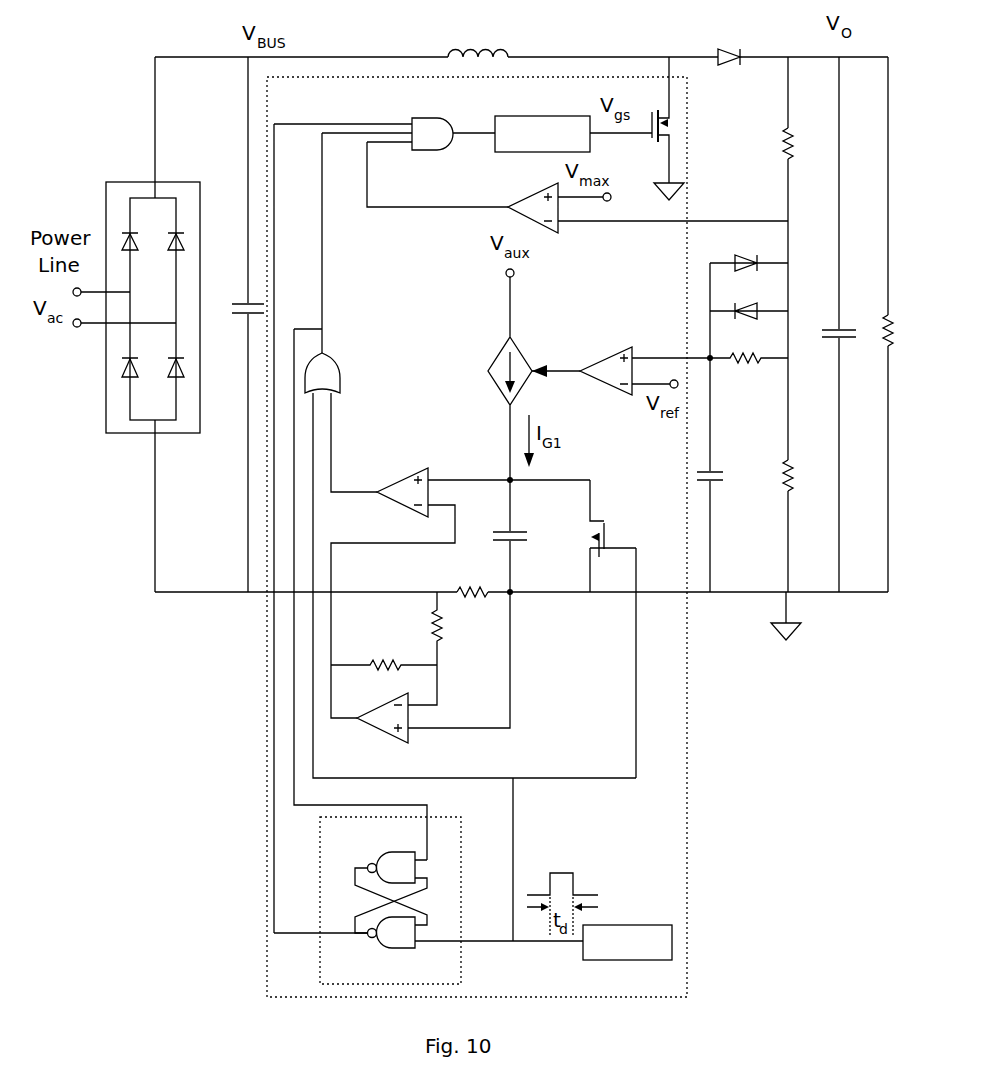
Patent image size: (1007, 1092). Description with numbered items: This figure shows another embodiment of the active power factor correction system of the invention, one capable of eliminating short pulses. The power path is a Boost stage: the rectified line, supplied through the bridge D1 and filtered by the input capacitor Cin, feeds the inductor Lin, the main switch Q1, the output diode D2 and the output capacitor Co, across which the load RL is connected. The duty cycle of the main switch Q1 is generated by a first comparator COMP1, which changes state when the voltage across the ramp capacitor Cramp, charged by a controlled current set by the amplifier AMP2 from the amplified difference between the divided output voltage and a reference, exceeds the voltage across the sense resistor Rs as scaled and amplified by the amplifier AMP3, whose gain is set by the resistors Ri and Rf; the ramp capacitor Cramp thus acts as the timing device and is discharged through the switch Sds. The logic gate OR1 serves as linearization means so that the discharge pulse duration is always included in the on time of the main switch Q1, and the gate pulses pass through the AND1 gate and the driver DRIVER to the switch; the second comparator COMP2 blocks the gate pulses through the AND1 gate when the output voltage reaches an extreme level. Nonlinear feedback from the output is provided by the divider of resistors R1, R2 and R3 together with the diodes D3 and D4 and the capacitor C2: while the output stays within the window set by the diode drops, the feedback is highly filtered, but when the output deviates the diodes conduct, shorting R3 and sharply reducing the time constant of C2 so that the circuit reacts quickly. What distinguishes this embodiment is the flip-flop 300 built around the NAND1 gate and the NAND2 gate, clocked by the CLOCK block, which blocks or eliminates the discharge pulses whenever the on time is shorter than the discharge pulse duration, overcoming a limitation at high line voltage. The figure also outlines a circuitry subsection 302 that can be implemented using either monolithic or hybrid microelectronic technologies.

The flip-flop 300 is at (413, 906).
The circuitry subsection 302 is at (688, 708).
The bridge rectifier D1 is at (153, 326).
The input capacitor Cin is at (234, 292).
The inductor Lin is at (478, 34).
The output diode D2 is at (728, 38).
The main switch Q1 is at (637, 128).
The resistor R1 is at (770, 145).
The resistor R2 is at (803, 479).
The resistor R3 is at (749, 344).
The diode D3 is at (749, 251).
The diode D4 is at (749, 299).
The capacitor C2 is at (724, 483).
The output capacitor Co is at (830, 315).
The load resistor RL is at (874, 312).
The AND1 gate AND1 is at (447, 118).
The driver DRIVER is at (542, 134).
The second comparator COMP2 is at (612, 203).
The logic gate OR1 is at (347, 373).
The amplifier AMP2 is at (621, 357).
The first comparator COMP1 is at (460, 578).
The ramp capacitor Cramp is at (531, 520).
The discharge switch Sds is at (614, 536).
The sense resistor Rs is at (472, 578).
The input resistor Ri is at (438, 648).
The feedback resistor Rf is at (384, 645).
The amplifier AMP3 is at (426, 681).
The NAND1 gate NAND1 is at (382, 879).
The NAND2 gate NAND2 is at (350, 922).
The clock generator CLOCK is at (627, 942).